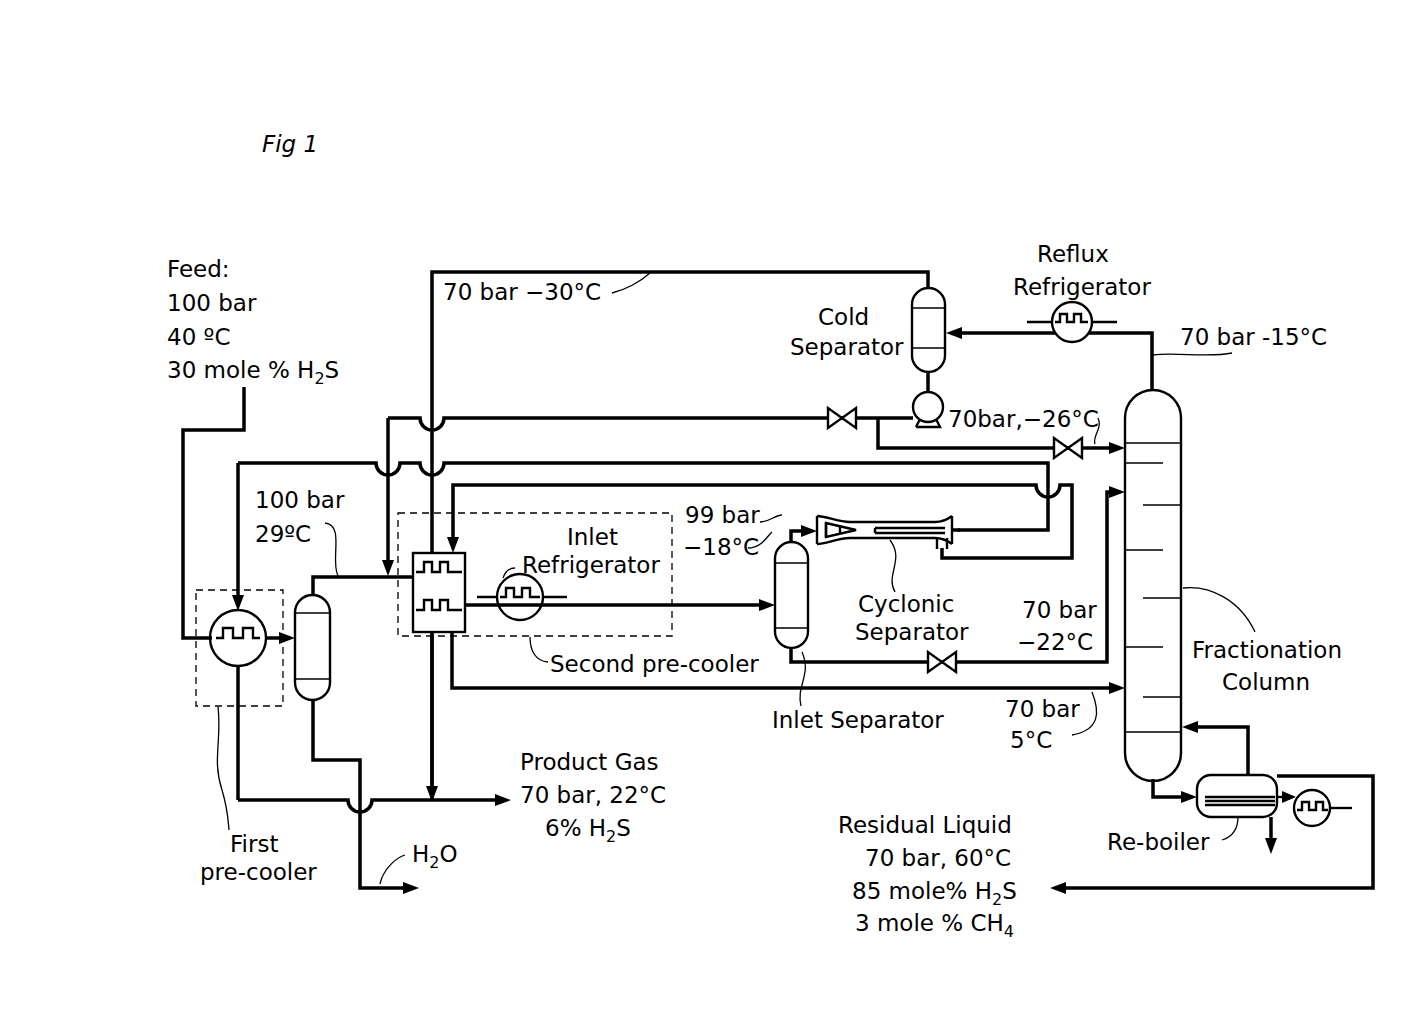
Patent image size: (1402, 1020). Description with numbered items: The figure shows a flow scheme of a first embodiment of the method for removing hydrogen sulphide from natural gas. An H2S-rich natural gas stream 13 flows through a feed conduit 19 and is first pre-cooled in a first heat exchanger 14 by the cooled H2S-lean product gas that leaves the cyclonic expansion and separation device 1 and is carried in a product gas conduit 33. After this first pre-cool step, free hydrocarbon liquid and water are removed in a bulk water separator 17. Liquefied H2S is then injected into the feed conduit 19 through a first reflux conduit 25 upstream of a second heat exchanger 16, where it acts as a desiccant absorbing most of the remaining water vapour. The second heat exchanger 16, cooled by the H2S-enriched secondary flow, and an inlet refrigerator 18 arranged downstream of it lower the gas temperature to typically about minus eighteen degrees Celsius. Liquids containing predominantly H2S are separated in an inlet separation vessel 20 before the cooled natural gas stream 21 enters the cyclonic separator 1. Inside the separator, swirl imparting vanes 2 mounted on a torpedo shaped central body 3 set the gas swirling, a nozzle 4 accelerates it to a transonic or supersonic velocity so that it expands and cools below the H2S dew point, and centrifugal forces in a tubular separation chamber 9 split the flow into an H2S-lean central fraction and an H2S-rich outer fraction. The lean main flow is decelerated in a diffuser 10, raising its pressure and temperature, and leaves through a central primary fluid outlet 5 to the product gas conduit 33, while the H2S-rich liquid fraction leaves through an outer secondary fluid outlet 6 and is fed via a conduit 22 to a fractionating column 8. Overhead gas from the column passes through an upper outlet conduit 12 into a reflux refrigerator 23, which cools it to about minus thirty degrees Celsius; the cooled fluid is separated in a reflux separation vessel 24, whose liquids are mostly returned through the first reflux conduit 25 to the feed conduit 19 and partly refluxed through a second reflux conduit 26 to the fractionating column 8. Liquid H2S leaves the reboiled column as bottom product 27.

The cyclonic expansion and separation device 1 is at (922, 508).
The swirl imparting vanes 2 is at (838, 541).
The torpedo shaped central body 3 is at (840, 522).
The nozzle 4 is at (848, 539).
The central primary fluid outlet 5 is at (962, 528).
The outer secondary fluid outlet 6 is at (939, 543).
The fractionating column 8 is at (1183, 462).
The tubular separation chamber 9 is at (868, 523).
The diffuser 10 is at (947, 520).
The upper outlet conduit 12 is at (1150, 370).
The natural gas stream 13 is at (183, 530).
The first heat exchanger 14 is at (224, 616).
The second heat exchanger 16 is at (413, 620).
The bulk water separator 17 is at (312, 647).
The inlet refrigerator 18 is at (538, 613).
The feed conduit 19 is at (480, 612).
The inlet separation vessel 20 is at (791, 595).
The cooled natural gas stream 21 is at (780, 536).
The conduit 22 is at (1088, 508).
The reflux refrigerator 23 is at (1066, 344).
The reflux separation vessel 24 is at (932, 337).
The first reflux conduit 25 is at (496, 416).
The second reflux conduit 26 is at (902, 448).
The bottom product 27 is at (1150, 794).
The product gas conduit 33 is at (500, 462).